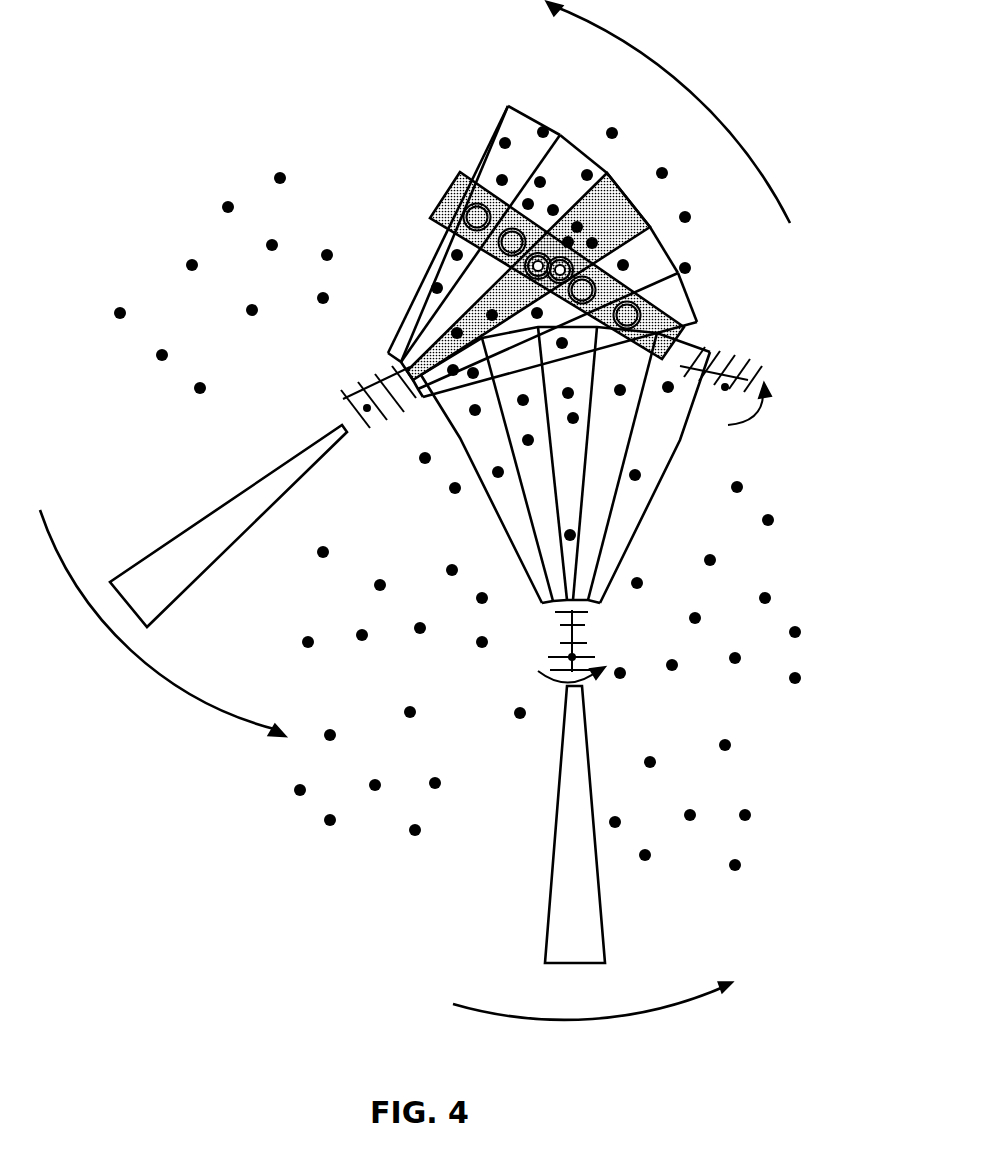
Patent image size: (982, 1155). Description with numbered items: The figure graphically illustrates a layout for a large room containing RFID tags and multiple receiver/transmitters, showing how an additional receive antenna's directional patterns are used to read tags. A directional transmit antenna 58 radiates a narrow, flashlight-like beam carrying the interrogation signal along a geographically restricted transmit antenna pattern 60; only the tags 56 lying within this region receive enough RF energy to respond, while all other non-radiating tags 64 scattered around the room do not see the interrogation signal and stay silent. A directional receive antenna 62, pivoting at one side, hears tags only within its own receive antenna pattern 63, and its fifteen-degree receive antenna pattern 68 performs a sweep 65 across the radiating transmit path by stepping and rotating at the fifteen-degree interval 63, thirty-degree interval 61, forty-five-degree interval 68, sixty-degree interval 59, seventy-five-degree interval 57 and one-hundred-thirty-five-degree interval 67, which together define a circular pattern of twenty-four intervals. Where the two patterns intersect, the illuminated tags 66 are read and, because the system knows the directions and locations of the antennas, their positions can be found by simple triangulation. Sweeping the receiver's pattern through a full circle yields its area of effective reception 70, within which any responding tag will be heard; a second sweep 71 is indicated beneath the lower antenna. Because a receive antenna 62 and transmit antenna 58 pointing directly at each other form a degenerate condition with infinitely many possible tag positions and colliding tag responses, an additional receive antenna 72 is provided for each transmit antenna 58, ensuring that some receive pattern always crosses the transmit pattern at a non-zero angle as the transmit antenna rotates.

The tags 56 is at (497, 173).
The interval T75 57 is at (520, 130).
The transmit antenna 58 is at (748, 369).
The interval T60 59 is at (582, 163).
The transmit antenna pattern 60 is at (459, 174).
The interval T30 61 is at (668, 252).
The receive antenna 62 is at (393, 383).
The interval T15 63 is at (701, 323).
The non-radiating tags 64 is at (455, 256).
The sweep 65 is at (711, 100).
The illuminated tags 66 is at (610, 173).
The interval T135 67 is at (178, 597).
The receive antenna pattern 68 is at (637, 206).
The area of effective reception 70 is at (394, 147).
The sweep wedge 71 is at (483, 1012).
The additional receive antenna 72 is at (560, 626).